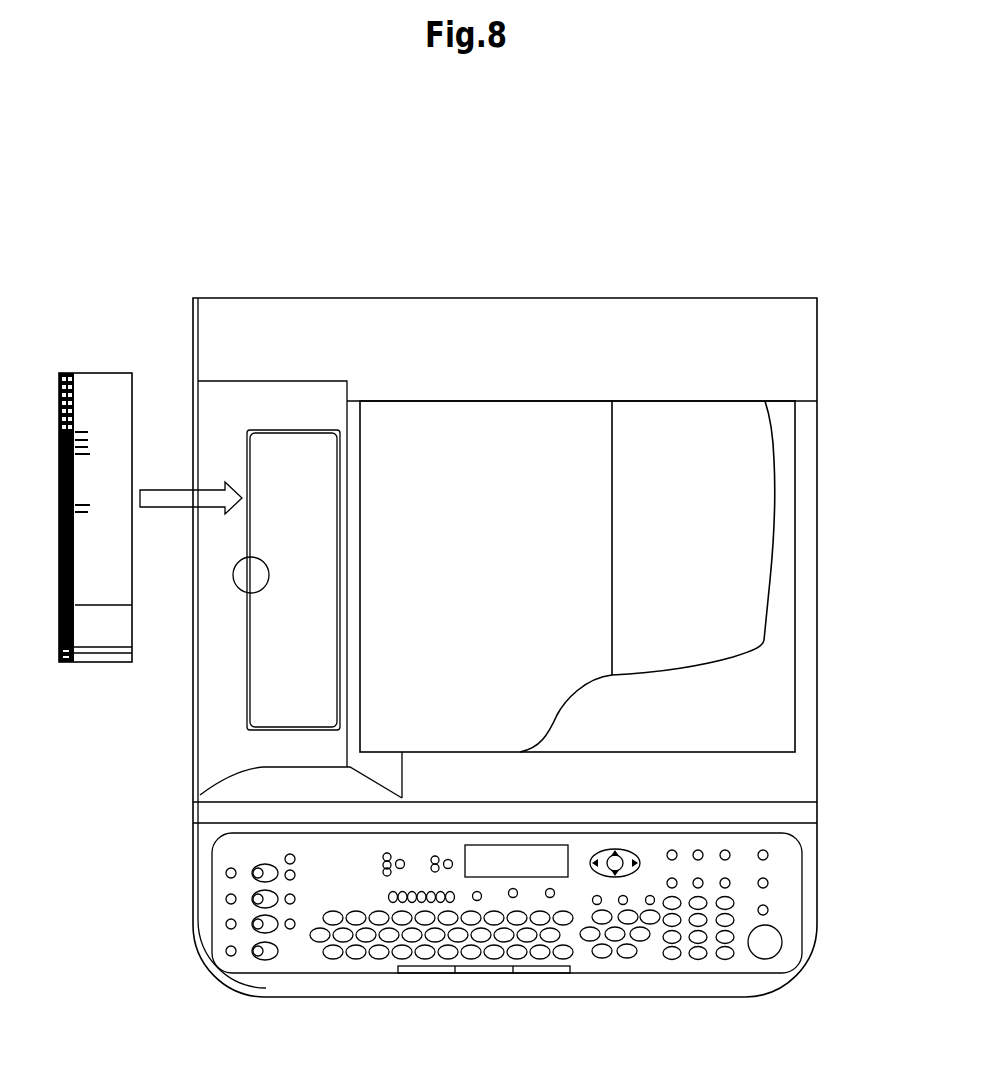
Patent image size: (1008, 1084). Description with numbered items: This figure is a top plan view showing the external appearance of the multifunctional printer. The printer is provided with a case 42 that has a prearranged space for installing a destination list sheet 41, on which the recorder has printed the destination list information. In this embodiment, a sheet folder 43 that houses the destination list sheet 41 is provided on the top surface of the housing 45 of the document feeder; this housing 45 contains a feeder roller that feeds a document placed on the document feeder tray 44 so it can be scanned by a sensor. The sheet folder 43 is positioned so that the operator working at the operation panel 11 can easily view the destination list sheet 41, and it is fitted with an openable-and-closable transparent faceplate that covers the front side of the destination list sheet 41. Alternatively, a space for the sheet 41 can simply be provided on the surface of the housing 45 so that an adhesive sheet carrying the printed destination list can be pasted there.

The operation panel 11 is at (300, 963).
The destination list sheet 41 is at (94, 373).
The case 42 is at (619, 298).
The sheet folder 43 is at (263, 691).
The document feeder tray 44 is at (773, 528).
The housing 45 is at (273, 381).